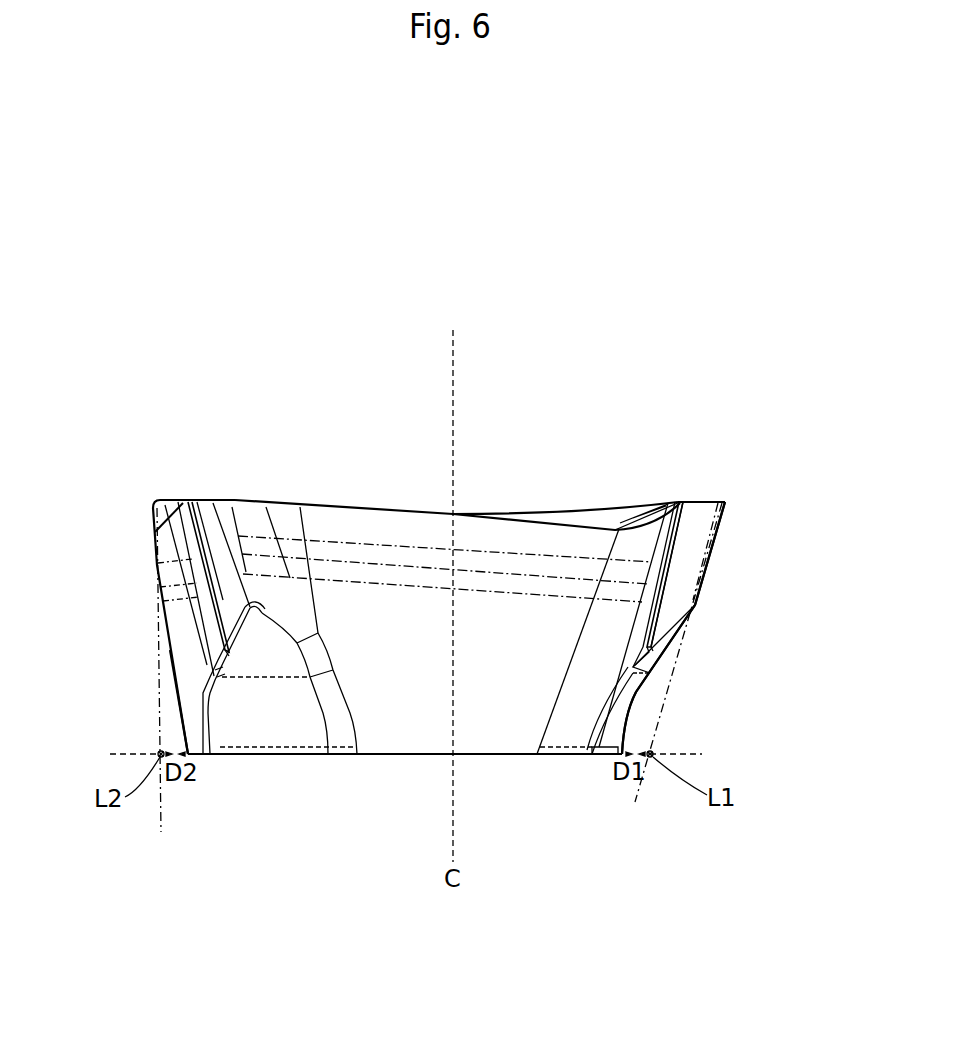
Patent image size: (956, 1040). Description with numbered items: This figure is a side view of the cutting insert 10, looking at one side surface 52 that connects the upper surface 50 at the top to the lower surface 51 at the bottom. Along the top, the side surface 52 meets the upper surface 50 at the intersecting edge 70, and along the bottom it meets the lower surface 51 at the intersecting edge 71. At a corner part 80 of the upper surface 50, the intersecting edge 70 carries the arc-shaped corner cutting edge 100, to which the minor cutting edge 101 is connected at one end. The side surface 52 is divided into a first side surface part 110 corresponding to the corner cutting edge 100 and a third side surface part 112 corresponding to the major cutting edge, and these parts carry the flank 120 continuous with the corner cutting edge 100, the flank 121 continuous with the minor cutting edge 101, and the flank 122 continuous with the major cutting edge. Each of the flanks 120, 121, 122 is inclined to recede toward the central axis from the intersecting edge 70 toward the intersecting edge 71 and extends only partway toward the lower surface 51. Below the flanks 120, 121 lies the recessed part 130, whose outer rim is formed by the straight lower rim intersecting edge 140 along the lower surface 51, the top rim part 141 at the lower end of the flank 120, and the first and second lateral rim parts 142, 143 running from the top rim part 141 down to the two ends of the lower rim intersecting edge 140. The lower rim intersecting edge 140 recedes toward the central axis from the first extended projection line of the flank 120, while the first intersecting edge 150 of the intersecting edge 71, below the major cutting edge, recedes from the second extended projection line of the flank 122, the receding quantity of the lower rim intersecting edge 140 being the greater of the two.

The cutting insert 10 is at (575, 408).
The upper surface 50 is at (372, 506).
The lower surface 51 is at (496, 757).
The side surface 52 is at (287, 514).
The intersecting edge 70 is at (245, 497).
The intersecting edge 71 is at (330, 757).
The corner part 80 is at (260, 503).
The corner cutting edge 100 is at (727, 500).
The minor cutting edge 101 is at (698, 498).
The first side surface part 110 is at (722, 523).
The third side surface part 112 is at (455, 535).
The flank 120 is at (296, 505).
The flank 121 is at (215, 510).
The flank 122 is at (487, 537).
The recessed part 130 is at (640, 703).
The lower rim intersecting edge 140 is at (247, 757).
The top rim part 141 is at (255, 603).
The first lateral rim part 142 is at (203, 695).
The second lateral rim part 143 is at (365, 735).
The first intersecting edge 150 is at (190, 757).